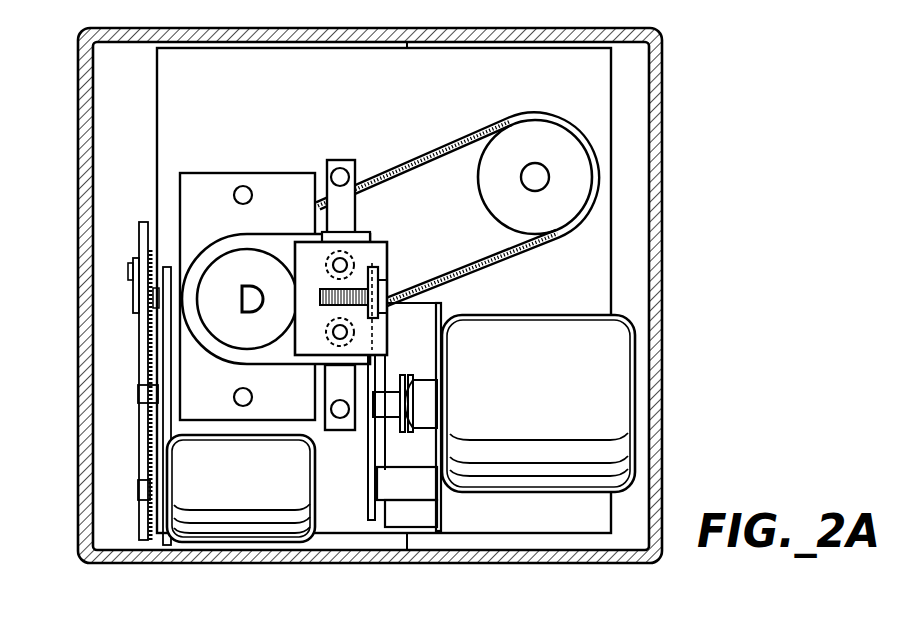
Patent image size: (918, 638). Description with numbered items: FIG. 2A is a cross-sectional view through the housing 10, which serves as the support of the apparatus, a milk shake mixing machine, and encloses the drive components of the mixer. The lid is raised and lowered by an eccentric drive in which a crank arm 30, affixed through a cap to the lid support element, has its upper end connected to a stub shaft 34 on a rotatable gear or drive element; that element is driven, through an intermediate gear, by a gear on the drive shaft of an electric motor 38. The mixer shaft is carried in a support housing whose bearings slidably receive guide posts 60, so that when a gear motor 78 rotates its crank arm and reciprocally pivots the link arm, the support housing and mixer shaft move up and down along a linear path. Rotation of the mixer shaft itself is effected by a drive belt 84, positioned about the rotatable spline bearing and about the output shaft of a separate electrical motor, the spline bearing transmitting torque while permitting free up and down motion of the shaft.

The housing 10 is at (530, 577).
The crank arm 30 is at (133, 305).
The stub shaft 34 is at (133, 262).
The electric motor 38 is at (248, 503).
The guide posts 60 is at (340, 250).
The gear motor 78 is at (637, 388).
The drive belt 84 is at (470, 273).